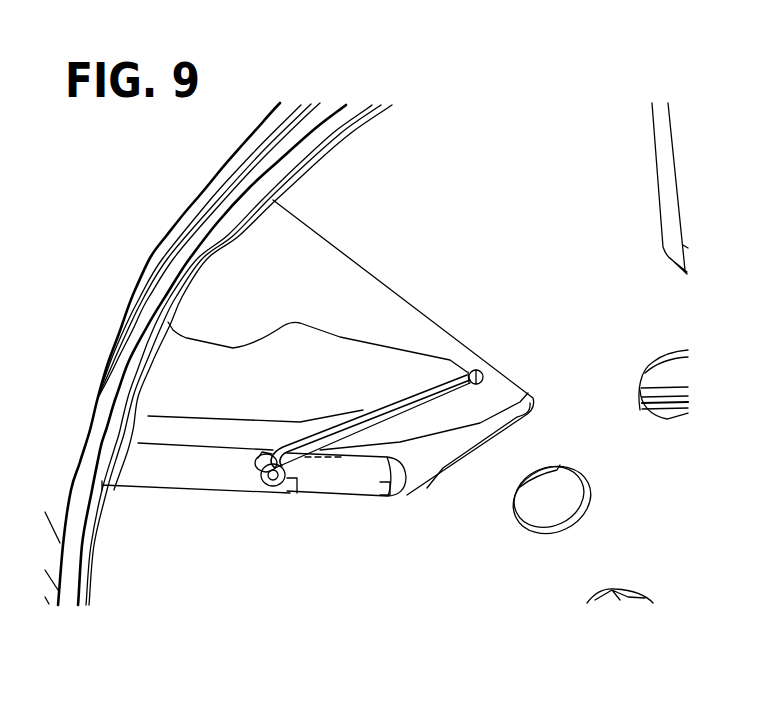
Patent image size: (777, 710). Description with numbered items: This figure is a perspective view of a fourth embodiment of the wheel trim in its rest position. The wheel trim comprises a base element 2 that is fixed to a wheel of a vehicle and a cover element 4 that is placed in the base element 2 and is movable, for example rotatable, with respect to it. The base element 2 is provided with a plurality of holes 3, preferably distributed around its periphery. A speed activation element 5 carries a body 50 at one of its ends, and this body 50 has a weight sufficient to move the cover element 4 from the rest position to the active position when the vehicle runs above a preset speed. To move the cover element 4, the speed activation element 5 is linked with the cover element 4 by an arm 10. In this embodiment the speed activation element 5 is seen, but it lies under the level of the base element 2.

The base element 2 is at (337, 210).
The holes 3 is at (198, 382).
The cover element 4 is at (227, 297).
The speed activation element 5 is at (335, 477).
The arm 10 is at (427, 393).
The body 50 is at (263, 478).